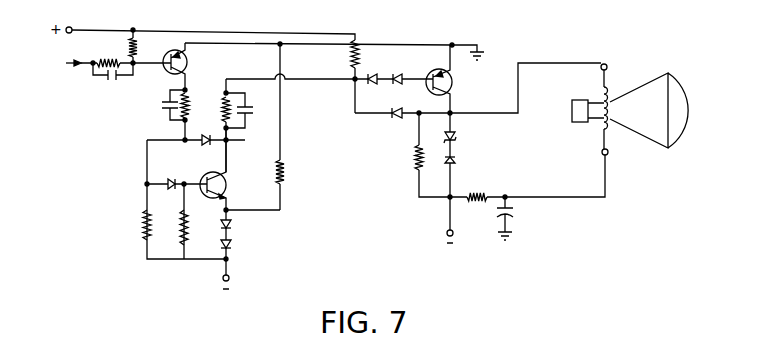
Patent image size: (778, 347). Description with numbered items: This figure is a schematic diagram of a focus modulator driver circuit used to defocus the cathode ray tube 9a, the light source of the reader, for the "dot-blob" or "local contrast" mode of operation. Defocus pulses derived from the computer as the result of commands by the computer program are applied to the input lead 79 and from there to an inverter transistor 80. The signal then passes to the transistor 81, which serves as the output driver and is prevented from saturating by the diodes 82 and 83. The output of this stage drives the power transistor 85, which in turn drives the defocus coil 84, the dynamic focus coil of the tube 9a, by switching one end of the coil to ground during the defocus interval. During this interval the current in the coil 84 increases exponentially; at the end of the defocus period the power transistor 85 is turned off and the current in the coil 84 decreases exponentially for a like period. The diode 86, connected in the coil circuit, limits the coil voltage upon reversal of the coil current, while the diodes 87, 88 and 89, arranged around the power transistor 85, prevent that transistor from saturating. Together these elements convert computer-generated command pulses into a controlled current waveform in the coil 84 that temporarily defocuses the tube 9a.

The input lead 79 is at (66, 63).
The inverter transistor 80 is at (187, 62).
The output driver transistor 81 is at (233, 185).
The diode 82 is at (212, 128).
The diode 83 is at (172, 178).
The defocus coil 84 is at (602, 128).
The power transistor 85 is at (452, 85).
The diode 86 is at (453, 138).
The diode 87 is at (377, 70).
The diode 88 is at (399, 78).
The diode 89 is at (397, 117).
The cathode ray tube 9a is at (657, 78).